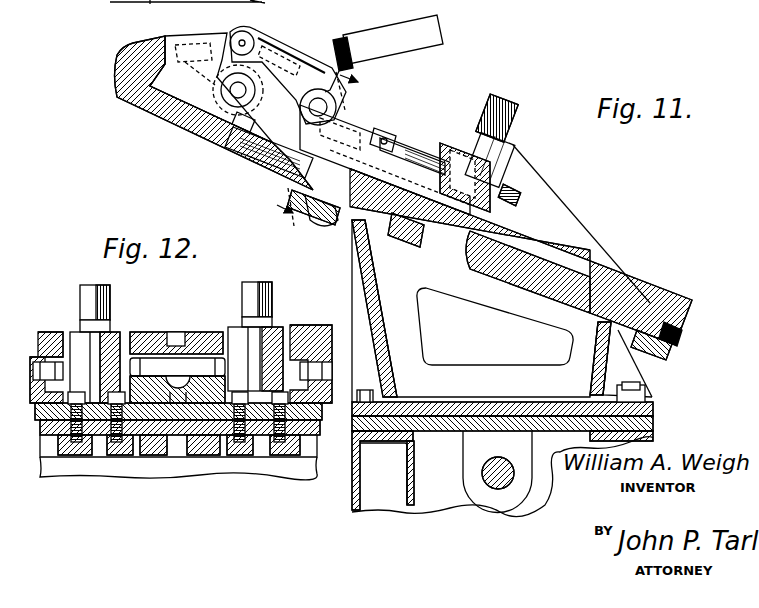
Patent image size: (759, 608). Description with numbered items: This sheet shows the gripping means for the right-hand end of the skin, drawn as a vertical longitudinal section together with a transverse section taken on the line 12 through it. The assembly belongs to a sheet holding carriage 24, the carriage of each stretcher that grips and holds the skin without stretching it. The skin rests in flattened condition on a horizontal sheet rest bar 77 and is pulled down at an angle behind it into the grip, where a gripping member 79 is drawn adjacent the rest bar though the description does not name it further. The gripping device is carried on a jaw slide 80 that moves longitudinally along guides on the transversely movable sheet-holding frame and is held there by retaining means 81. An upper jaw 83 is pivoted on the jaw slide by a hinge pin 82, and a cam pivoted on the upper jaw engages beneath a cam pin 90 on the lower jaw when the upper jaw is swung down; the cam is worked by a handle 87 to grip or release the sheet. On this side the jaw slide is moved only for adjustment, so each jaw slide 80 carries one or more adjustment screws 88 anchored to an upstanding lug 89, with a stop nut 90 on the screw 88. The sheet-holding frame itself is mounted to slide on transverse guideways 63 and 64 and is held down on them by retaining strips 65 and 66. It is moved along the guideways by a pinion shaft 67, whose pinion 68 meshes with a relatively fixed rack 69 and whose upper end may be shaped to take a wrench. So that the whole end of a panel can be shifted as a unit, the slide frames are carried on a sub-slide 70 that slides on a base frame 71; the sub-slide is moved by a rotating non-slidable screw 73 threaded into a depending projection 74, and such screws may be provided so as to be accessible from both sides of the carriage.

In FIG. 11, the section line 12— 12 is at (316, 149).
In FIG. 11, the sheet holding carriage 24 is at (660, 402).
In FIG. 11, the transverse guideway 63 is at (630, 297).
In FIG. 11, the transverse guideway 64 is at (345, 228).
In FIG. 12, the transverse guideway 64 is at (290, 445).
In FIG. 11, the retaining strip 65 is at (673, 336).
In FIG. 11, the retaining strip 66 is at (300, 213).
In FIG. 12, the retaining strip 66 is at (260, 460).
In FIG. 11, the pinion shaft 67 is at (505, 116).
In FIG. 12, the pinion shaft 67 is at (80, 298).
In FIG. 11, the pinion 68 is at (483, 252).
In FIG. 11, the rack 69 is at (410, 243).
In FIG. 11, the sub-slide 70 is at (363, 306).
In FIG. 11, the base frame 71 is at (368, 460).
In FIG. 11, the screw 73 is at (495, 490).
In FIG. 11, the depending projection 74 is at (473, 483).
In FIG. 11, the sheet rest bar 77 is at (135, 69).
In FIG. 11, the clamp jaw 79 is at (190, 92).
In FIG. 12, the clamp jaw 79 is at (210, 440).
In FIG. 11, the jaw slide 80 is at (316, 217).
In FIG. 12, the jaw slide 80 is at (148, 443).
In FIG. 11, the retaining means 81 is at (258, 162).
In FIG. 12, the retaining means 81 is at (130, 447).
In FIG. 12, the hinge pin 82 is at (167, 360).
In FIG. 11, the upper jaw 83 is at (277, 57).
In FIG. 12, the upper jaw 83 is at (195, 338).
In FIG. 11, the handle 87 is at (406, 45).
In FIG. 11, the adjustment screw 88 is at (408, 152).
In FIG. 12, the adjustment screw 88 is at (180, 393).
In FIG. 11, the upstanding lug 89 is at (462, 165).
In FIG. 11, the stop nut 90 is at (507, 173).